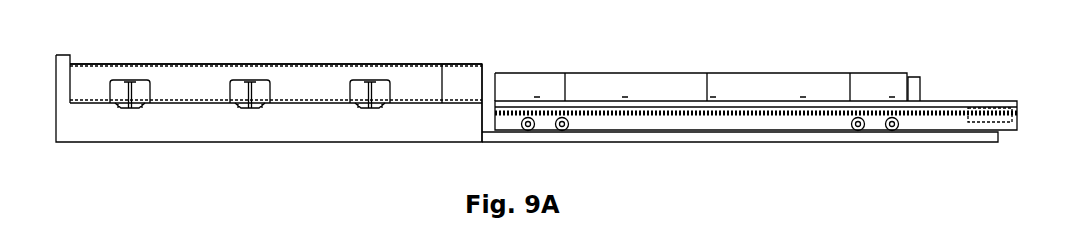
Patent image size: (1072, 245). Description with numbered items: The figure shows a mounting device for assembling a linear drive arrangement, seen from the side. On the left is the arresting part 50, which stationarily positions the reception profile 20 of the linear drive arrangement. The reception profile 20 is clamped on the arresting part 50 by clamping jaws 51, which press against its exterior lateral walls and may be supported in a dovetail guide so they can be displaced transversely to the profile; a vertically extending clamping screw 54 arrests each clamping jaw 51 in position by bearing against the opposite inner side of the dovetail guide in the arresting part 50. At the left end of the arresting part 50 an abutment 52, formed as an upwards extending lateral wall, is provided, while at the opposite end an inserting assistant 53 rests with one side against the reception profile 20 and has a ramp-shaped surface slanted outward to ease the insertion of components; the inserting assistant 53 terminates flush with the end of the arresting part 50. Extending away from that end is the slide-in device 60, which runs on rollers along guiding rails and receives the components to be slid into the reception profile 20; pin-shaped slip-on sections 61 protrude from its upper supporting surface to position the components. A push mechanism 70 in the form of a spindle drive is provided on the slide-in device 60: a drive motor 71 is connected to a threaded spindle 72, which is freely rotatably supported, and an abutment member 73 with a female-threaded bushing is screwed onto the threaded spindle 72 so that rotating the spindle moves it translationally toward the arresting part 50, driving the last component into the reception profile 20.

The reception profile 20 is at (397, 63).
The arresting part 50 is at (233, 142).
The clamping jaws 51 is at (350, 85).
The abutment 52 is at (61, 57).
The inserting assistant 53 is at (462, 72).
The clamping screw 54 is at (367, 108).
The slide-in device 60 is at (648, 133).
The slip-on sections 61 is at (892, 97).
The push mechanism 70 is at (1023, 77).
The drive motor 71 is at (988, 114).
The threaded spindle 72 is at (715, 117).
The abutment member 73 is at (915, 80).